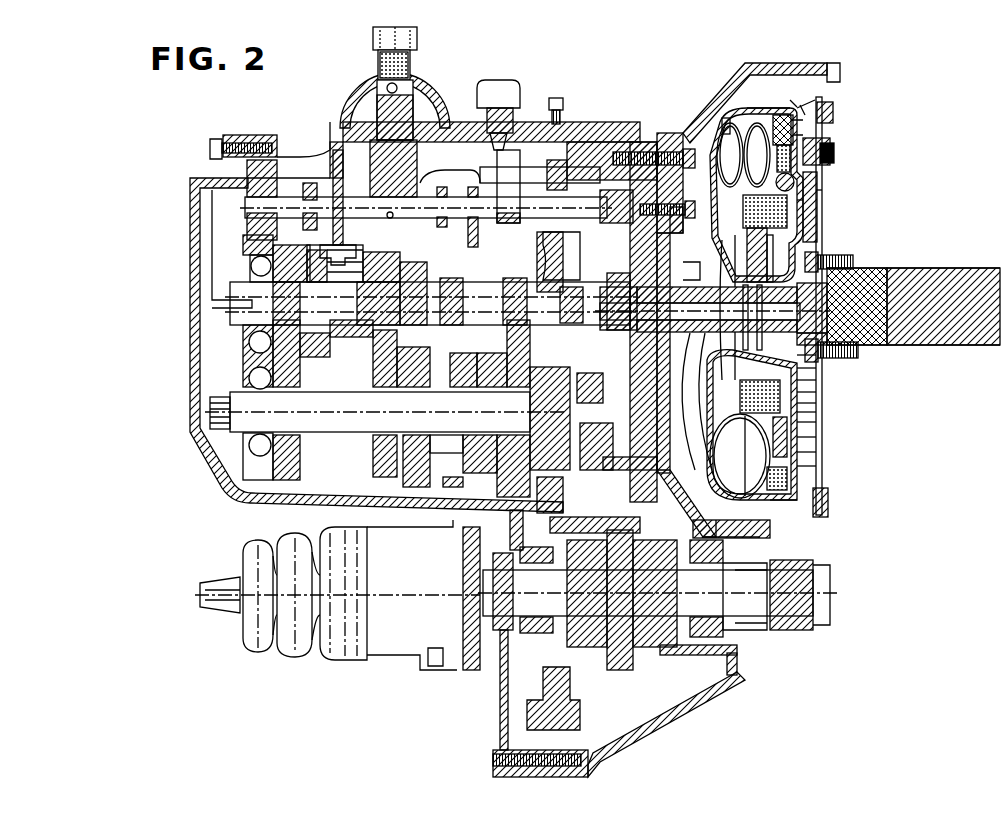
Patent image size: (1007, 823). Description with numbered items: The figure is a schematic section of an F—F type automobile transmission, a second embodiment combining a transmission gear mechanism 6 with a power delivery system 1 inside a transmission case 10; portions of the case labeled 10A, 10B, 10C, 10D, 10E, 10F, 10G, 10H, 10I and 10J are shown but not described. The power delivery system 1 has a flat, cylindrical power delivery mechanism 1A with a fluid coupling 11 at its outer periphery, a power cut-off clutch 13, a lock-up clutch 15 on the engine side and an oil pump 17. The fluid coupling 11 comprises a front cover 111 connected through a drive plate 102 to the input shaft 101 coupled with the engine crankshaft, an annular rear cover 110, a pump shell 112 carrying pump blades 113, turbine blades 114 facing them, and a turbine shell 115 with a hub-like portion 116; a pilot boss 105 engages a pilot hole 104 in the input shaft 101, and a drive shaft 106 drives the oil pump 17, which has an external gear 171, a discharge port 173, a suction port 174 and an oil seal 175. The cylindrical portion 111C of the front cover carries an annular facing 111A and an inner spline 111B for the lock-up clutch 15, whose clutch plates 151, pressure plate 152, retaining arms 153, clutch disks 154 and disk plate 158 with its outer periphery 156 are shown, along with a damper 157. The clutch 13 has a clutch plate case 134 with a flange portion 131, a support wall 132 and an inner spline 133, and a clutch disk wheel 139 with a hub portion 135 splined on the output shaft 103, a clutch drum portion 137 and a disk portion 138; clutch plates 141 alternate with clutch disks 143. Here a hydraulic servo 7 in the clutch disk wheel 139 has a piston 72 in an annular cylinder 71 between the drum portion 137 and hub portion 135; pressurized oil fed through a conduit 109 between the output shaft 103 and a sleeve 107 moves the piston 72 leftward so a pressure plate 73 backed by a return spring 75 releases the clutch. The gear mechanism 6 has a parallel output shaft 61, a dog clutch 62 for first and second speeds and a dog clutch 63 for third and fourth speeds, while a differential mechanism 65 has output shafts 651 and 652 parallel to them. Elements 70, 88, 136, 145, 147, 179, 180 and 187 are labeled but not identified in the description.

The power delivery system 1 is at (803, 100).
The power delivery mechanism 1A is at (792, 100).
The transmission gear mechanism 6 is at (334, 122).
The hydraulic servo 7 is at (823, 245).
The transmission case 10 is at (614, 122).
The housing flange lip 10A is at (842, 64).
The bell housing wall 10B is at (662, 140).
The clutch cover top 10C is at (763, 106).
The dome boss 10D is at (458, 122).
The left housing wall 10E is at (188, 207).
The differential housing wall 10F is at (710, 692).
The differential housing side wall 10G is at (502, 720).
The housing flange 10H is at (646, 471).
The housing slanted wall 10I is at (657, 472).
The housing boss 10J is at (688, 225).
The fluid coupling 11 is at (740, 106).
The power cut-off clutch 13 is at (803, 403).
The lock-up clutch 15 is at (808, 126).
The oil pump 17 is at (657, 150).
The output shaft 61 is at (323, 420).
The dog clutch 62 is at (433, 487).
The dog clutch 63 is at (327, 238).
The differential mechanism 65 is at (645, 679).
The flywheel 70 is at (893, 290).
The annular cylinder 71 is at (855, 260).
The piston 72 is at (893, 278).
The pressure plate 73 is at (733, 362).
The return spring 75 is at (742, 440).
The engine crankshaft 88 is at (897, 330).
The input shaft 101 is at (845, 300).
The drive plate 102 is at (822, 198).
The output shaft 103 is at (649, 140).
The pilot hole 104 is at (833, 336).
The pilot boss 105 is at (833, 318).
The drive shaft 106 is at (597, 285).
The sleeve 107 is at (616, 285).
The conduit 109 is at (861, 320).
The rear cover 110 is at (690, 128).
The front cover 111 is at (822, 180).
The annular facing 111A is at (834, 113).
The inner spline 111B is at (832, 108).
The cylindrical portion 111C is at (812, 100).
The pump shell 112 is at (726, 118).
The pump blades 113 is at (730, 155).
The turbine blades 114 is at (758, 155).
The turbine shell 115 is at (780, 118).
The hub-like portion 116 is at (832, 191).
The flange portion 131 is at (740, 456).
The support wall 132 is at (803, 424).
The inner spline 133 is at (803, 452).
The clutch plate case 134 is at (803, 437).
The hub portion 135 is at (860, 350).
The sleeve 136 is at (803, 412).
The clutch drum portion 137 is at (803, 394).
The disk portion 138 is at (803, 382).
The clutch disk wheel 139 is at (803, 372).
The clutch plates 141 is at (790, 212).
The clutch disks 143 is at (822, 227).
The fulcrum ring 145 is at (803, 360).
The bolt 147 is at (675, 201).
The clutch plates 151 is at (792, 502).
The lock-up clutch pressure plate 152 is at (756, 505).
The clutch disk retaining arms 153 is at (803, 467).
The clutch disks 154 is at (830, 502).
The outer periphery 156 is at (831, 148).
The damper 157 is at (796, 180).
The disk plate 158 is at (836, 158).
The external gear 171 is at (701, 260).
The discharge port 173 is at (672, 490).
The suction port 174 is at (752, 207).
The oil seal 175 is at (700, 470).
The bearing 179 is at (637, 351).
The release sleeve 180 is at (673, 350).
The gear 187 is at (655, 372).
The output shaft 651 is at (497, 630).
The output shaft 652 is at (739, 676).